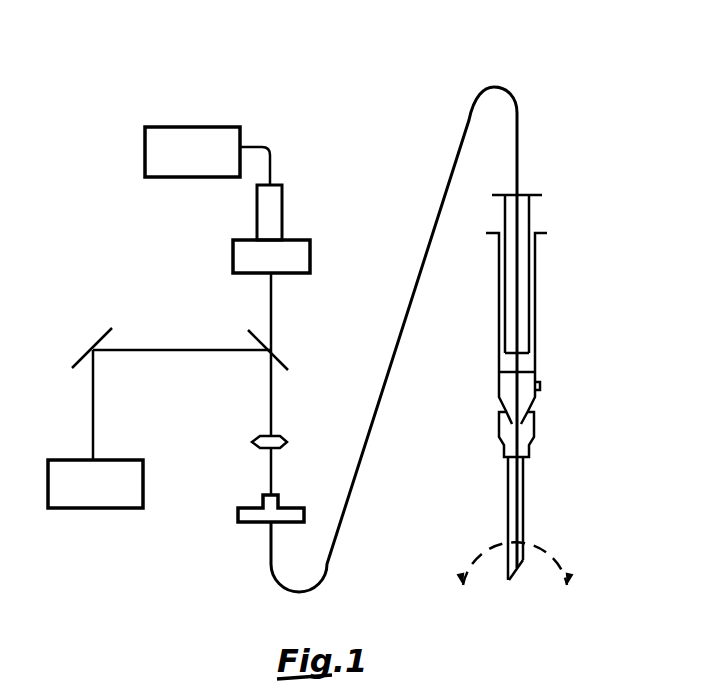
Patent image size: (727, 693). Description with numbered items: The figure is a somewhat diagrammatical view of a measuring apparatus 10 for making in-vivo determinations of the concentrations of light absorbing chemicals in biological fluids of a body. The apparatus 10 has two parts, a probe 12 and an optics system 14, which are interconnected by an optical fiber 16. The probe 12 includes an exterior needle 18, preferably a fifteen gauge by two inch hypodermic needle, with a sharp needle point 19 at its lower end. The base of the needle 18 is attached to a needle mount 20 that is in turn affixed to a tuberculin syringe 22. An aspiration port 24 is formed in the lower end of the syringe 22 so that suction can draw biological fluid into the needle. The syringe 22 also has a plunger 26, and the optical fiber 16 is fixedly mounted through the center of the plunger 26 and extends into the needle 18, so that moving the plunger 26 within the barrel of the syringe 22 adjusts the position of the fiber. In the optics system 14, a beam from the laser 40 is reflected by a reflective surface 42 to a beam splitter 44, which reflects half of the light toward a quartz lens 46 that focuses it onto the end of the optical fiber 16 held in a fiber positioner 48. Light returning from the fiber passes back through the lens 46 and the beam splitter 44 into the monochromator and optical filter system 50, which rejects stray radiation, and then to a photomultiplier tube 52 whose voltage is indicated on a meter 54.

The measuring apparatus 10 is at (340, 96).
The probe 12 is at (535, 169).
The optics system 14 is at (262, 121).
The optical fiber 16 is at (441, 197).
The exterior needle 18 is at (508, 478).
The needle point 19 is at (509, 579).
The needle mount 20 is at (498, 423).
The tuberculin syringe 22 is at (499, 380).
The aspiration port 24 is at (552, 380).
The plunger 26 is at (530, 215).
The laser 40 is at (113, 460).
The reflective surface 42 is at (87, 349).
The beam splitter 44 is at (278, 350).
The quartz lens 46 is at (277, 437).
The fiber positioner 48 is at (288, 510).
The monochromator and optical filter system 50 is at (307, 242).
The photomultiplier tube 52 is at (282, 202).
The meter 54 is at (193, 127).